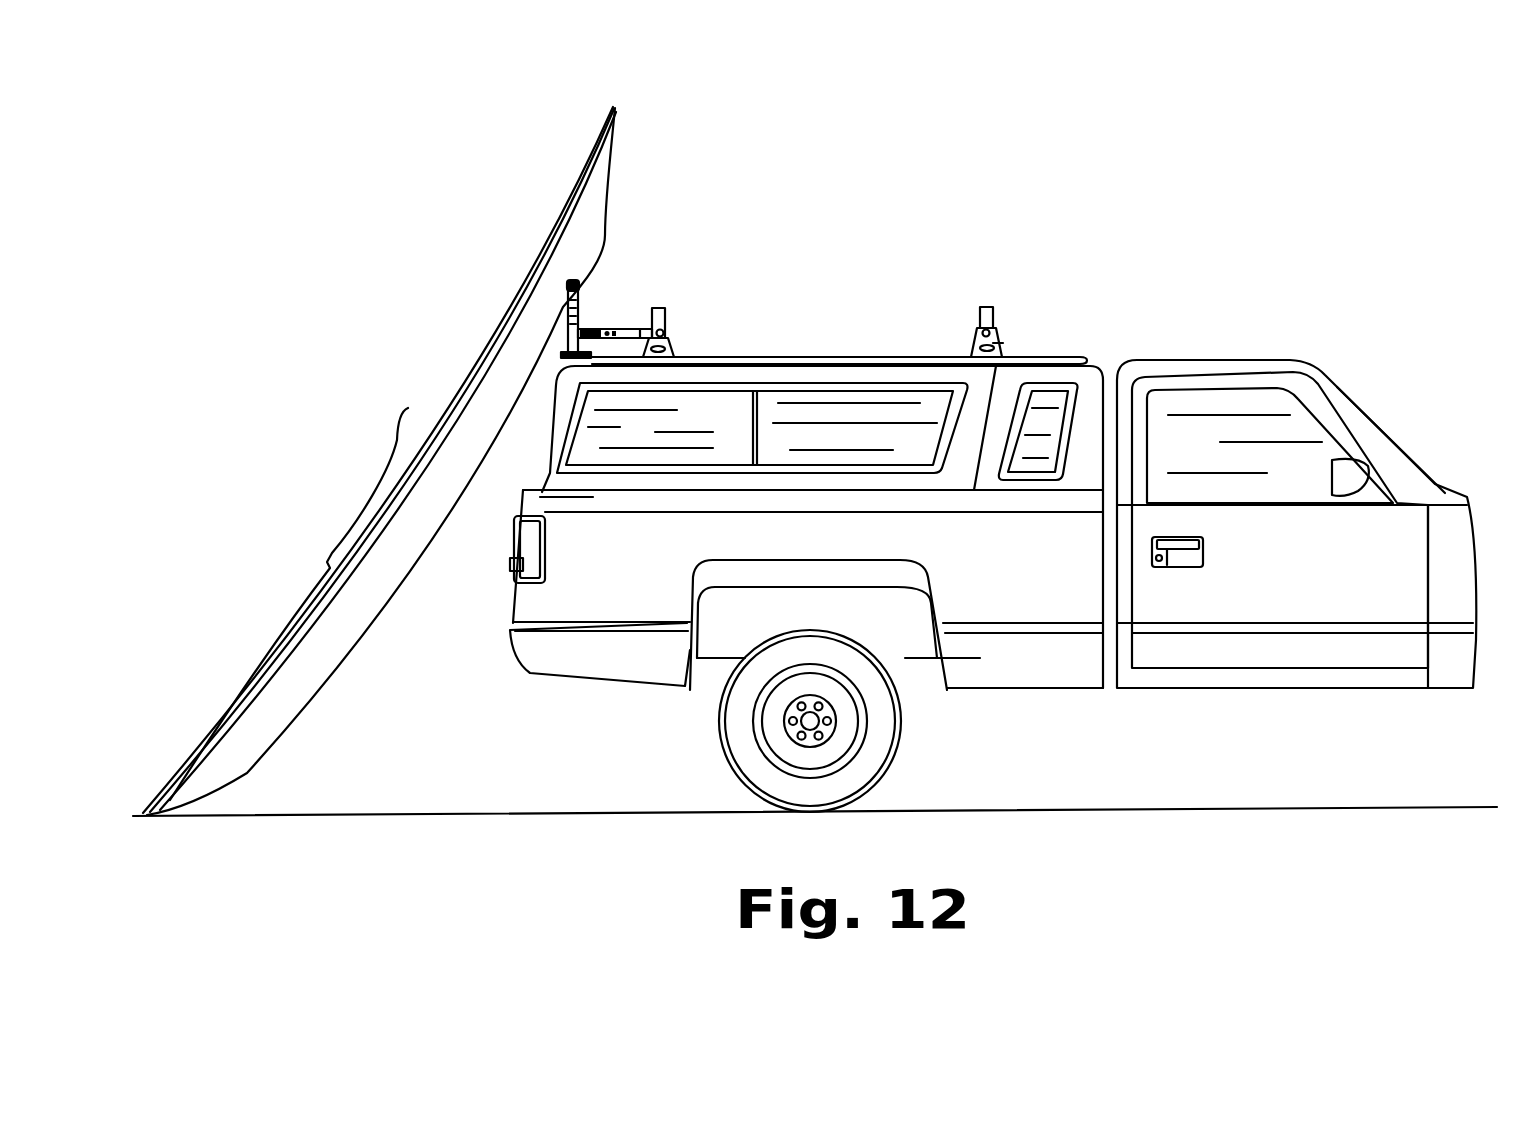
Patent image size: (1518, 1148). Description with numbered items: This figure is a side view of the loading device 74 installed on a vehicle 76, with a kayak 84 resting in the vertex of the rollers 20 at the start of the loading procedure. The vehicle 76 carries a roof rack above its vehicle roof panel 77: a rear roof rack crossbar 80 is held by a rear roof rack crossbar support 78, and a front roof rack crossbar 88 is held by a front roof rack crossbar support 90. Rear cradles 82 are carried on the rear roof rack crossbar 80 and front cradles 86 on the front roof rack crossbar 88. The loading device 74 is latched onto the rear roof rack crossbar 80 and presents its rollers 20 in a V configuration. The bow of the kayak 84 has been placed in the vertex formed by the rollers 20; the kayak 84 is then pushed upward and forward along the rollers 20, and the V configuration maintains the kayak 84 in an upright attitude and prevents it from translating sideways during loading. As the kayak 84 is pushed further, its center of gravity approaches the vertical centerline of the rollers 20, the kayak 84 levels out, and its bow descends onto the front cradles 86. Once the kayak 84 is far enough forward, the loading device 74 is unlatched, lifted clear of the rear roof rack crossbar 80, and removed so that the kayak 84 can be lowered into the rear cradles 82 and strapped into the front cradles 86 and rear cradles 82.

The rollers 20 is at (580, 283).
The loading device 74 is at (604, 329).
The vehicle 76 is at (548, 455).
The vehicle roof panel 77 is at (567, 377).
The rear roof rack crossbar support 78 is at (668, 343).
The rear roof rack crossbar 80 is at (664, 331).
The rear cradles 82 is at (659, 318).
The kayak 84 is at (518, 267).
The front cradles 86 is at (988, 305).
The front roof rack crossbar 88 is at (995, 333).
The front roof rack crossbar support 90 is at (1000, 345).